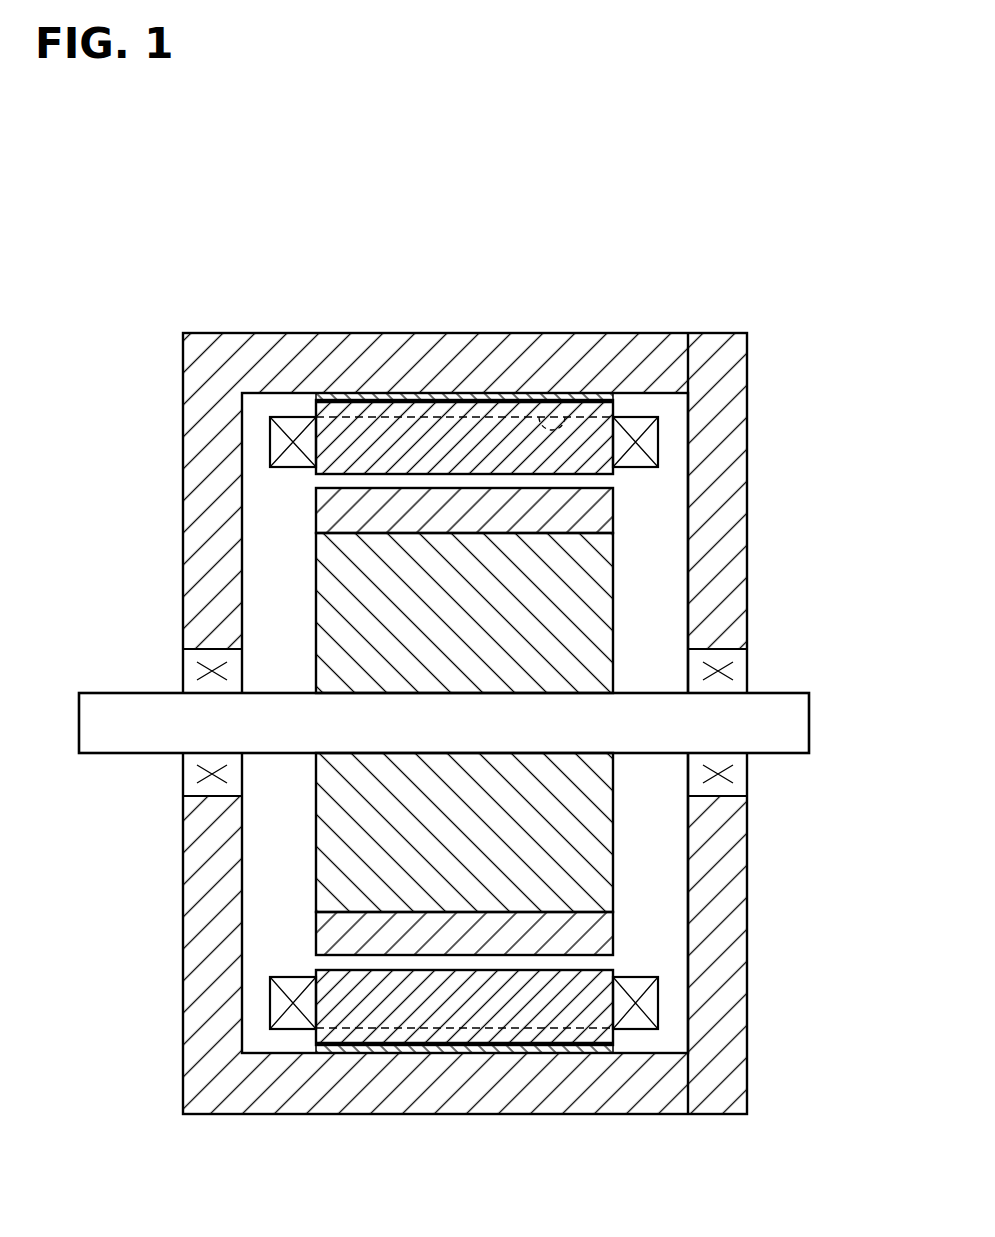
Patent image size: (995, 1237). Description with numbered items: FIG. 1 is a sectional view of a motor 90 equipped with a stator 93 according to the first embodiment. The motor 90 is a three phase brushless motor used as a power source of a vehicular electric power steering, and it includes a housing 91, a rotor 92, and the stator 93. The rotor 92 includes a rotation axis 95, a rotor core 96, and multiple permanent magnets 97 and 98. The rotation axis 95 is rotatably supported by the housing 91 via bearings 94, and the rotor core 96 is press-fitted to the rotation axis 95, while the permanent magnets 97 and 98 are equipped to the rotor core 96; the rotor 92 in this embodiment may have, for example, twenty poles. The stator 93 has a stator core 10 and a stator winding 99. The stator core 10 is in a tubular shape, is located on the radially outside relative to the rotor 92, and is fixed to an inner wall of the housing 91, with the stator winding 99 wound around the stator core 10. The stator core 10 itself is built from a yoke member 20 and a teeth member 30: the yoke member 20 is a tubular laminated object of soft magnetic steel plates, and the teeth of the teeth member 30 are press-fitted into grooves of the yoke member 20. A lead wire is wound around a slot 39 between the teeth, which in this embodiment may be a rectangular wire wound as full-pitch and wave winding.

The motor 90 is at (212, 312).
The housing 91 is at (482, 346).
The rotor 92 is at (316, 858).
The stator 93 is at (268, 438).
The bearings 94 is at (192, 672).
The rotation axis 95 is at (795, 722).
The rotor core 96 is at (582, 611).
The permanent magnet 97 is at (595, 510).
The permanent magnet 98 is at (595, 940).
The stator winding 99 is at (652, 443).
The stator core 10 is at (402, 287).
The teeth member 30 is at (371, 428).
The yoke member 20 is at (405, 400).
The slot 39 is at (577, 398).